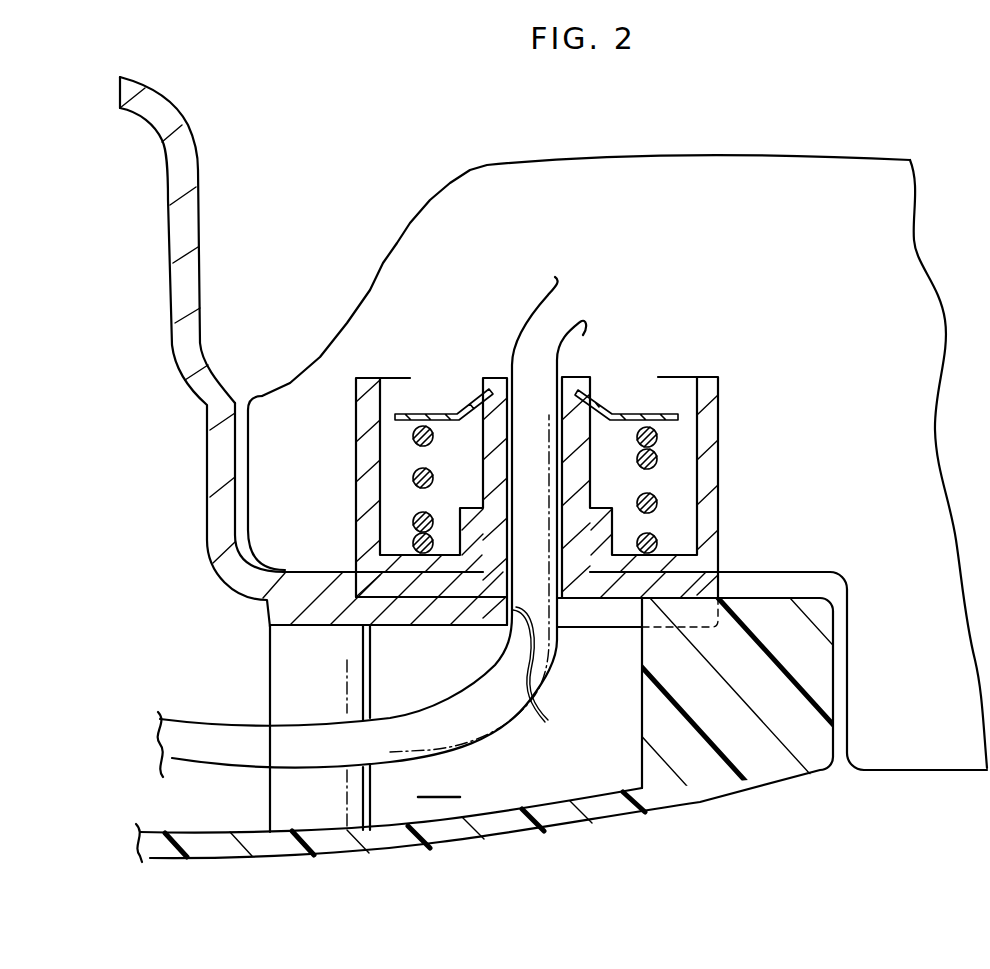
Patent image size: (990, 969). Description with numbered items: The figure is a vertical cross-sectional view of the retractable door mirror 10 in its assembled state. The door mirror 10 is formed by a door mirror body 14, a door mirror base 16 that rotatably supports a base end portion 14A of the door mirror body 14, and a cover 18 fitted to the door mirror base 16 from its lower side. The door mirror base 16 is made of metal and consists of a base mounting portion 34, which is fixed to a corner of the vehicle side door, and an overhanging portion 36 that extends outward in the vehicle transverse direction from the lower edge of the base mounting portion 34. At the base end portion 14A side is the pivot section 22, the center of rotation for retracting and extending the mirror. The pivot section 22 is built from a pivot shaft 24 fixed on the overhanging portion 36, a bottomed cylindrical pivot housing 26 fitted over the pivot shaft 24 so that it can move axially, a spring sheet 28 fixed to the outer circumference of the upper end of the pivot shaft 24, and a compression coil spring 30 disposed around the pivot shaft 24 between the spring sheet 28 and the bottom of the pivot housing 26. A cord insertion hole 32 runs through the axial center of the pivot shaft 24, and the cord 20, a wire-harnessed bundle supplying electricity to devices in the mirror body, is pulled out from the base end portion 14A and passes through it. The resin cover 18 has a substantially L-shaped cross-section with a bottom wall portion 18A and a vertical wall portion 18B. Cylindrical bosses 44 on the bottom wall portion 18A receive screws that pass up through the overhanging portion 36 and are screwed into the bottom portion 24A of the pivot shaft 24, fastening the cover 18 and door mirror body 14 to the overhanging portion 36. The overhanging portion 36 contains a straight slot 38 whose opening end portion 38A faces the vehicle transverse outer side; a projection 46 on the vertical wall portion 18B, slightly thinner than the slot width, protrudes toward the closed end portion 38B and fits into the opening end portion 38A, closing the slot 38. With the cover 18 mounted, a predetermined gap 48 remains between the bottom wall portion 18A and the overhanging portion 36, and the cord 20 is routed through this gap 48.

The retractable door mirror 10 is at (503, 150).
The door mirror body 14 is at (683, 152).
The base end portion 14A is at (284, 392).
The door mirror base 16 is at (205, 198).
The base mounting portion 34 is at (195, 263).
The cover 18 is at (590, 836).
The bottom wall portion 18A is at (397, 842).
The vertical wall portion 18B is at (822, 665).
The cord 20 is at (210, 735).
The pivot section 22 is at (632, 394).
The pivot shaft 24 is at (493, 370).
The bottom portion 24A is at (440, 612).
The pivot housing 26 is at (710, 522).
The spring sheet 28 is at (441, 416).
The compression coil spring 30 is at (418, 482).
The cord insertion hole 32 is at (502, 417).
The overhanging portion 36 is at (410, 615).
The slot 38 is at (582, 617).
The opening end portion 38A is at (718, 627).
The closed end portion 38B is at (547, 708).
The cylindrical bosses 44 is at (317, 808).
The projection 46 is at (657, 615).
The gap 48 is at (439, 781).